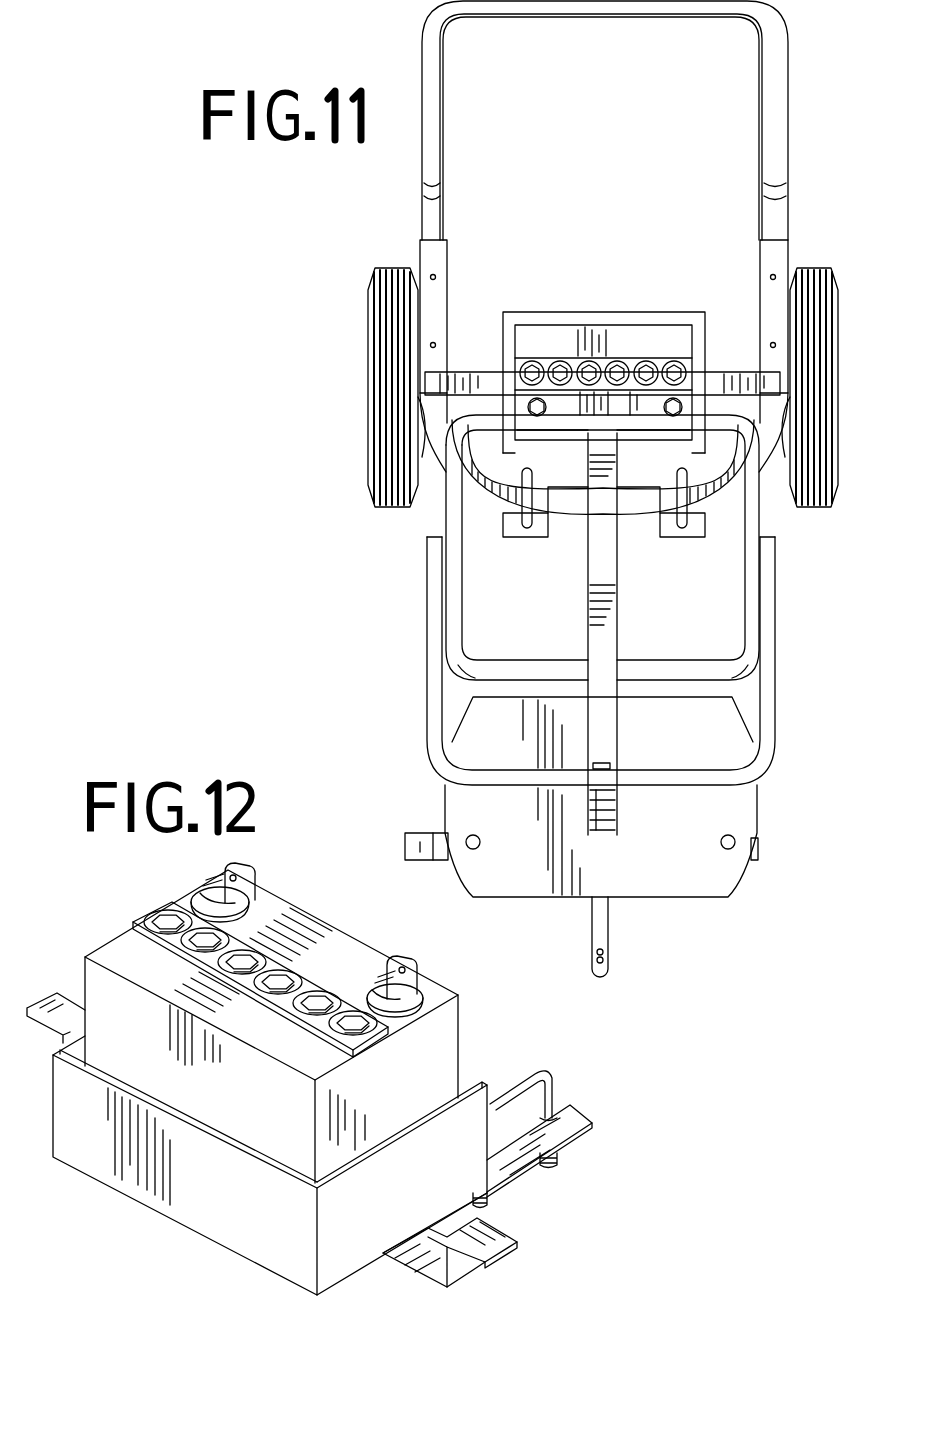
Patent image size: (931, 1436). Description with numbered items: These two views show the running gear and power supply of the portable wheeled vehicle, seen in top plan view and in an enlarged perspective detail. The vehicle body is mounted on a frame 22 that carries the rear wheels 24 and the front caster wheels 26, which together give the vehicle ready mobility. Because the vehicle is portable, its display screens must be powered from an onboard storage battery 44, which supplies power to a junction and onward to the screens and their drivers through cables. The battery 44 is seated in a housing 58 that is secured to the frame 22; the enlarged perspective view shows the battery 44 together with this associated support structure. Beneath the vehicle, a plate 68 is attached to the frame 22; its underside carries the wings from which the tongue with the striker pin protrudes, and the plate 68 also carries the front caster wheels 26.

In FIG. 11, the frame 22 is at (778, 252).
In FIG. 11, the rear wheels 24 is at (368, 442).
In FIG. 11, the front caster wheels 26 is at (420, 836).
In FIG. 11, the storage battery 44 is at (572, 352).
In FIG. 12, the storage battery 44 is at (332, 942).
In FIG. 11, the housing 58 is at (615, 308).
In FIG. 12, the housing 58 is at (218, 1205).
In FIG. 11, the plate 68 is at (733, 803).